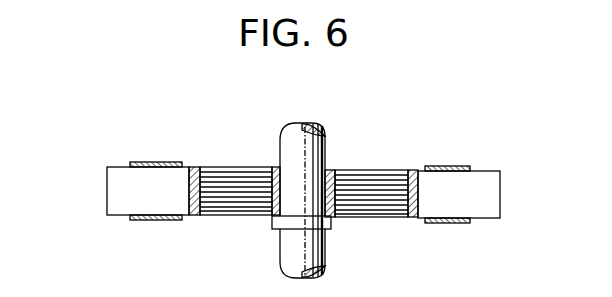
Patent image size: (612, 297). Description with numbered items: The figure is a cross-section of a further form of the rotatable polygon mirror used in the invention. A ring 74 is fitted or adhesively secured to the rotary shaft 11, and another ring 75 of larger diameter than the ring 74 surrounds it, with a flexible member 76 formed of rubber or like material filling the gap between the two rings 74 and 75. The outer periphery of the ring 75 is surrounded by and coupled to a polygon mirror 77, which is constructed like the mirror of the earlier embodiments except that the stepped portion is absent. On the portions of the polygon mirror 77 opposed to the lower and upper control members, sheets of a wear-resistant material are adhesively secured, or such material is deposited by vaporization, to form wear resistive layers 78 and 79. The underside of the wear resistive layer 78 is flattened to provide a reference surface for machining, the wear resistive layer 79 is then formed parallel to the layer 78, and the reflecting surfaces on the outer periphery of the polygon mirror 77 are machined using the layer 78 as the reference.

The rotary shaft 11 is at (293, 142).
The ring 74 is at (328, 170).
The ring 75 is at (412, 170).
The flexible member 76 is at (229, 197).
The polygon mirror 77 is at (118, 205).
The wear resistive layer 78 is at (157, 220).
The wear resistive layer 79 is at (158, 162).